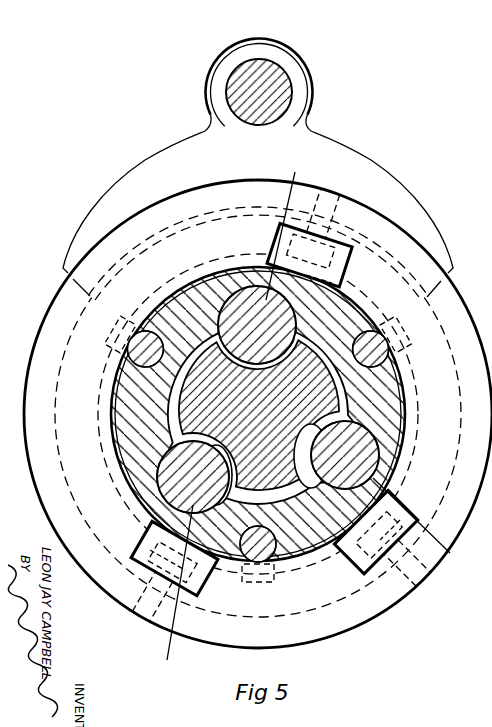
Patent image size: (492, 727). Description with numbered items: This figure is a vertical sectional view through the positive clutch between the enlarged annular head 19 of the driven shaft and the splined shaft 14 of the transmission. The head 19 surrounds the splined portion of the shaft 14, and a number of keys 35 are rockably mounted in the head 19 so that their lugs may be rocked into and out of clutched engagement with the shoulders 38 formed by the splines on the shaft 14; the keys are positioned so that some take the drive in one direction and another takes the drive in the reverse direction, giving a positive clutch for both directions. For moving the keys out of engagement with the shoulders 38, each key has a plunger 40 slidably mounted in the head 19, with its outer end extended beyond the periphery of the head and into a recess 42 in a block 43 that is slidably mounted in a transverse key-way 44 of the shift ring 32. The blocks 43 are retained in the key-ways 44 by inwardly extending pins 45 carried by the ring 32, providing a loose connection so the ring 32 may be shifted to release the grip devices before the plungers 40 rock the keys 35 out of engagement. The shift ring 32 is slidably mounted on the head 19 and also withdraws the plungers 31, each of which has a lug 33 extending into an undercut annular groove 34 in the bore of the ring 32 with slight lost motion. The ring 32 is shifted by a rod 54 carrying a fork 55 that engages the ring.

The splined shaft 14 is at (259, 415).
The enlarged annular head 19 is at (387, 395).
The plunger 31 is at (128, 350).
The shift ring 32 is at (363, 620).
The lug 33 is at (123, 335).
The undercut annular groove 34 is at (418, 432).
The key 35 is at (242, 296).
The shoulder 38 is at (205, 392).
The plunger 40 is at (340, 280).
The recess 42 is at (282, 255).
The block 43 is at (338, 240).
The transverse key-way 44 is at (318, 415).
The pin 45 is at (332, 212).
The rod 54 is at (289, 88).
The fork 55 is at (383, 178).